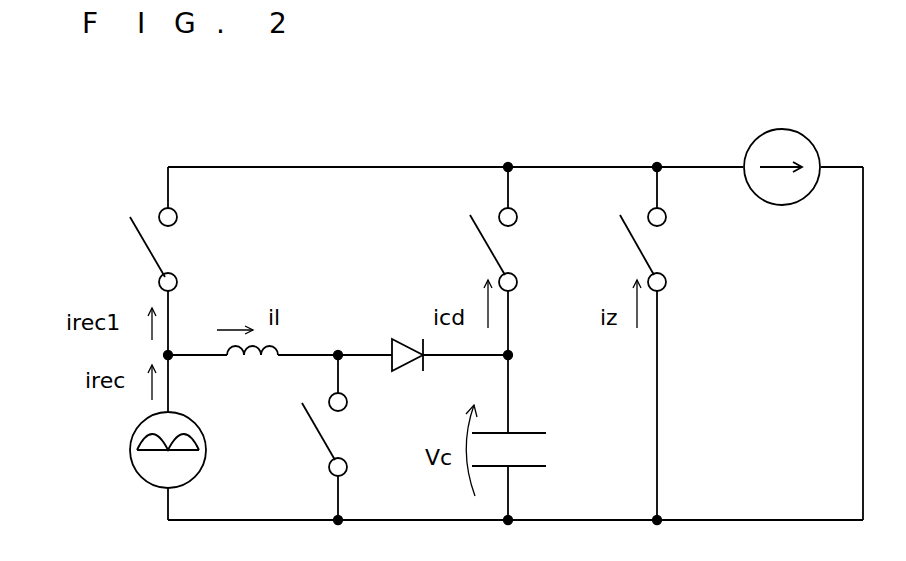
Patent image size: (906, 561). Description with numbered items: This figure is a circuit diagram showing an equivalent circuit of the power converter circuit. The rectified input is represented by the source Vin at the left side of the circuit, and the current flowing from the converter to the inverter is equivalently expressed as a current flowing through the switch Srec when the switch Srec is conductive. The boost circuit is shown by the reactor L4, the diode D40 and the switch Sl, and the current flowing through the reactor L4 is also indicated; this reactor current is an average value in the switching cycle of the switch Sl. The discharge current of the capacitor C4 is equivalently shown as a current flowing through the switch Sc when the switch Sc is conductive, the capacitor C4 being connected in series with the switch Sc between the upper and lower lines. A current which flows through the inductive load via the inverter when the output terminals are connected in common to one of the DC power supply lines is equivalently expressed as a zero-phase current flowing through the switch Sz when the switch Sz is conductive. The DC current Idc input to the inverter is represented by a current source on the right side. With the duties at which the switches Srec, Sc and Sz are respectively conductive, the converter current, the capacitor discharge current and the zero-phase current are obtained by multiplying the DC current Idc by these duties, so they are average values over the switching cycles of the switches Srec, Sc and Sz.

The switch Srec is at (128, 249).
The rectified input voltage source Vin is at (123, 425).
The reactor L4 is at (255, 360).
The switch Sl is at (315, 437).
The diode D40 is at (406, 371).
The switch Sc is at (482, 261).
The capacitor C4 is at (546, 448).
The switch Sz is at (630, 343).
The DC current Idc is at (782, 193).